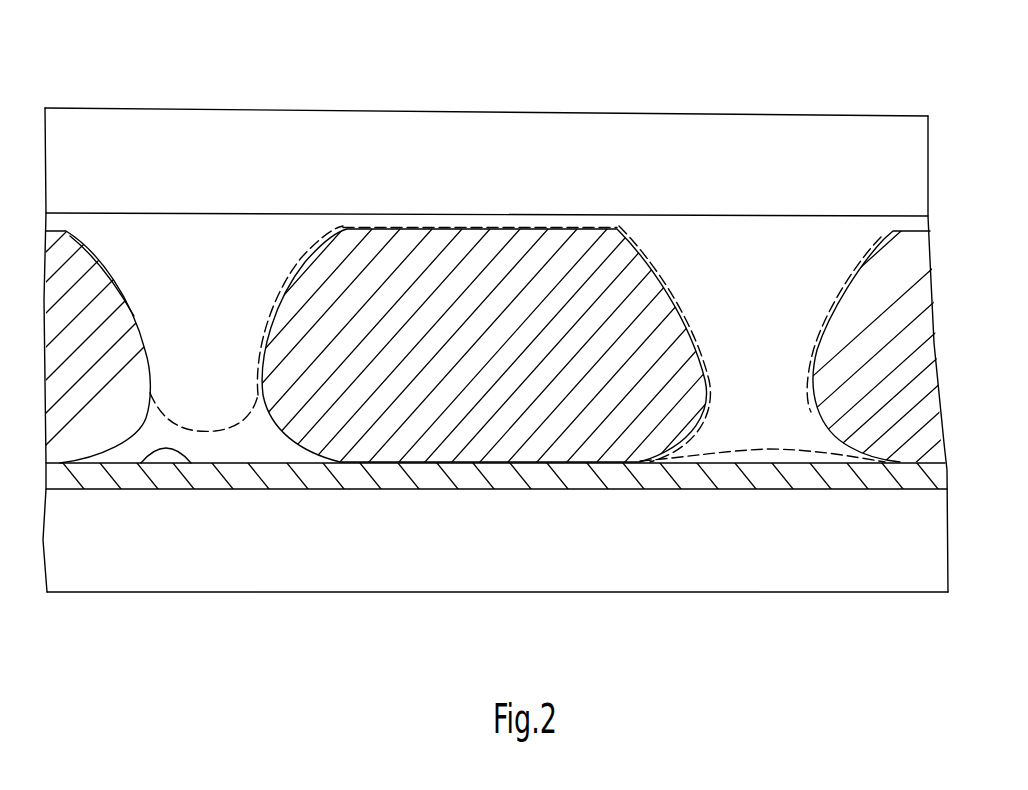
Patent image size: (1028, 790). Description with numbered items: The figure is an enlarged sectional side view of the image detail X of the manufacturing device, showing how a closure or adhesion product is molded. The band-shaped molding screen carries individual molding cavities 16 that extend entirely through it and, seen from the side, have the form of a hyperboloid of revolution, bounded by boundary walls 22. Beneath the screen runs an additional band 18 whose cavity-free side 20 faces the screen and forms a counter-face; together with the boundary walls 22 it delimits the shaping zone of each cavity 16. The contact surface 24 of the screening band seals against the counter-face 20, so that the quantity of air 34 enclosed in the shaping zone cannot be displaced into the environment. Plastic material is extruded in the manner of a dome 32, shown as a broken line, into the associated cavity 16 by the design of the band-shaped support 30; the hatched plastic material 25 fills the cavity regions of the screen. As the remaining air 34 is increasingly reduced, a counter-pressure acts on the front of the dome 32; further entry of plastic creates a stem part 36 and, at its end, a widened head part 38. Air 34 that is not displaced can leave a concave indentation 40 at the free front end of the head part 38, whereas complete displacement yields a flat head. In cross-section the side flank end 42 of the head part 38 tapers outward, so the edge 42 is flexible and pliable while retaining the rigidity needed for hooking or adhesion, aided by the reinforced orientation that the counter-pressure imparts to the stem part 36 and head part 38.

The molding cavity 16 is at (193, 345).
The additional band 18 is at (778, 475).
The side of the additional band (counter-face) 20 is at (150, 452).
The boundary wall 22 is at (137, 307).
The contact surface 24 is at (467, 464).
The solder body (hatched) 25 is at (93, 262).
The band-shaped support 30 is at (400, 228).
The dome 32 is at (256, 278).
The quantity of air 34 is at (243, 440).
The stem part 36 is at (807, 295).
The head part 38 is at (671, 454).
The concave indentation 40 is at (773, 453).
The side flank end (edge) 42 is at (860, 457).
The detail (enlarged longitudinal section) X is at (930, 296).